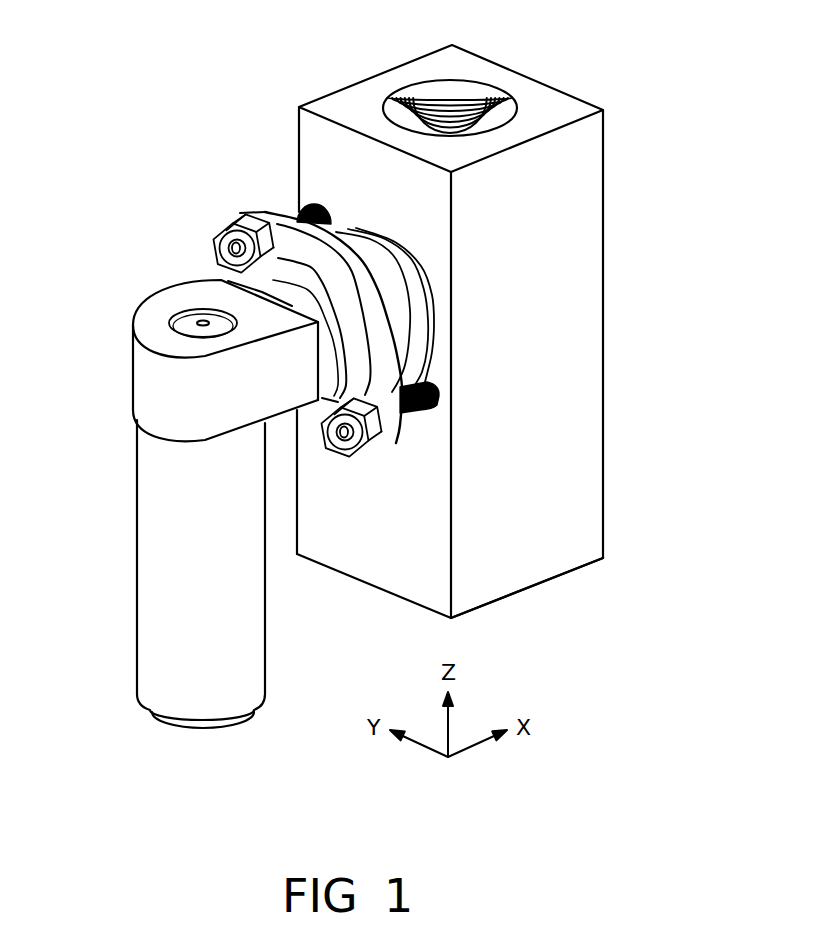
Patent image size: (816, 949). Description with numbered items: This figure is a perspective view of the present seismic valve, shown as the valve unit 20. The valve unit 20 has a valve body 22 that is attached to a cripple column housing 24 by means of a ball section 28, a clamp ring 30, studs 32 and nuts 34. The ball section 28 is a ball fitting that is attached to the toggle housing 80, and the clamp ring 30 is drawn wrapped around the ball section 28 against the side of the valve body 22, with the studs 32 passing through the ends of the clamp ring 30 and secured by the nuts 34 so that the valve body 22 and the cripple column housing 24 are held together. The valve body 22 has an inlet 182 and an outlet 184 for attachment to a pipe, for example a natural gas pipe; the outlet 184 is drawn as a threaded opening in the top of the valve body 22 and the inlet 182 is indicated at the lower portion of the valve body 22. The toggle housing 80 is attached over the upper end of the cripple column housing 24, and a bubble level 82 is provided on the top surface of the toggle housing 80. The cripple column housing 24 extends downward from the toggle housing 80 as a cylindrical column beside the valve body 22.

The valve unit 20 is at (312, 315).
The valve body 22 is at (600, 227).
The cripple column housing 24 is at (142, 560).
The ball section 28 is at (418, 332).
The clamp ring 30 is at (263, 210).
The studs 32 is at (297, 205).
The nuts 34 is at (223, 228).
The toggle housing 80 is at (175, 364).
The bubble level 82 is at (182, 322).
The inlet 182 is at (522, 593).
The outlet 184 is at (495, 101).